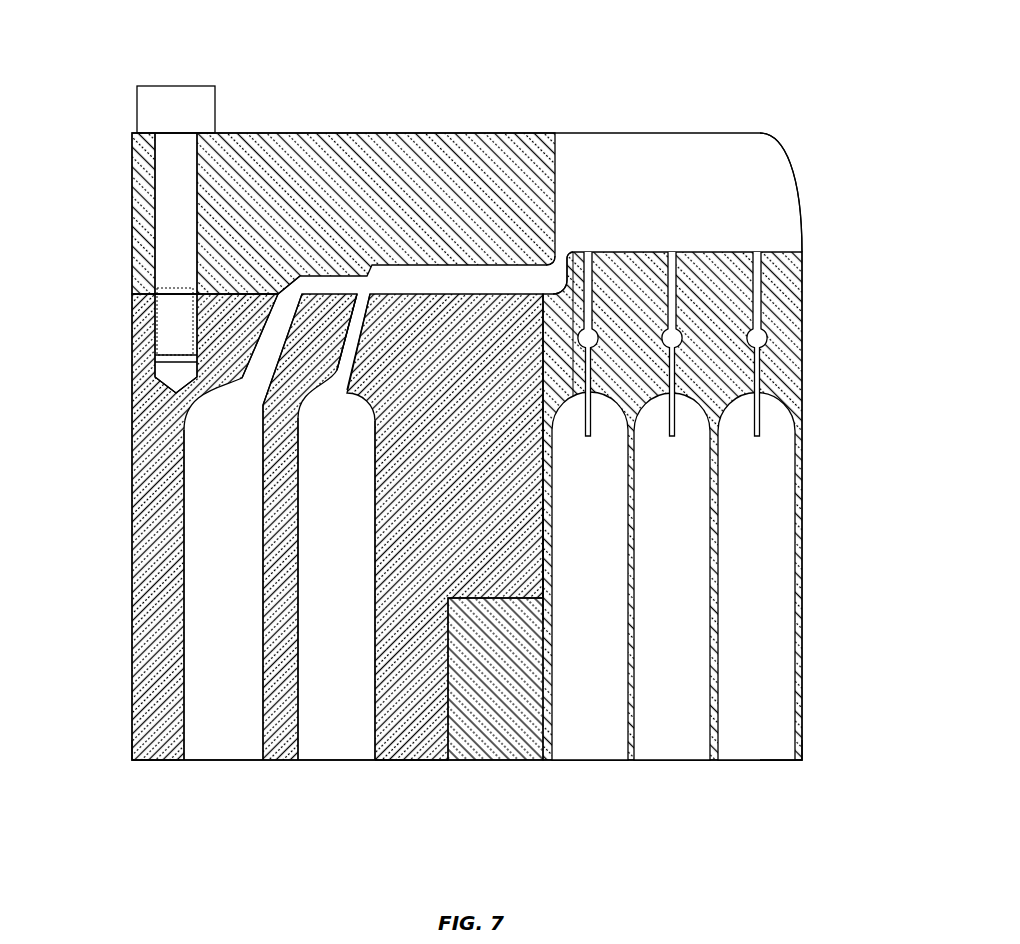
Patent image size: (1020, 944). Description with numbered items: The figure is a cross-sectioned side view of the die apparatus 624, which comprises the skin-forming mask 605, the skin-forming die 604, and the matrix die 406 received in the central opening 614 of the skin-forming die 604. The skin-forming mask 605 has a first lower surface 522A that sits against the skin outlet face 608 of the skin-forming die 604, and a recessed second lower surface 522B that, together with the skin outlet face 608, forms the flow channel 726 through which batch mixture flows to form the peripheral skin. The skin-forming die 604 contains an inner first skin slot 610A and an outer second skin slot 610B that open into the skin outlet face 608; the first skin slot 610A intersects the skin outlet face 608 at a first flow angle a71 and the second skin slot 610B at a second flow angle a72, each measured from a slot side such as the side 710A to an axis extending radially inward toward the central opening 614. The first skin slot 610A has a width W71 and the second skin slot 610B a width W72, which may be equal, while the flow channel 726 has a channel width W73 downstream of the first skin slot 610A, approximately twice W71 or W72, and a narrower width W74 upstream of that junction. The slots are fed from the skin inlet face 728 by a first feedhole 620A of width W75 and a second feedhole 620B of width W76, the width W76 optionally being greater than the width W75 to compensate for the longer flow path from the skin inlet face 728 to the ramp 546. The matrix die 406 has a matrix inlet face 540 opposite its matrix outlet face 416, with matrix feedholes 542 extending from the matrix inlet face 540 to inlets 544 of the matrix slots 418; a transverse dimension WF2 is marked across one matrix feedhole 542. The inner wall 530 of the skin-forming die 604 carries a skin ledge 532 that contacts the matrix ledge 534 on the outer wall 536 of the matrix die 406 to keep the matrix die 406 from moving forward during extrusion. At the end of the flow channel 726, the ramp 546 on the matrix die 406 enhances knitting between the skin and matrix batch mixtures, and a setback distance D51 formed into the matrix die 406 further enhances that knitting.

The die apparatus 624 is at (620, 56).
The skin-forming mask 605 is at (357, 130).
The skin-forming die 604 is at (128, 467).
The matrix die 406 is at (713, 508).
The skin outlet face 608 is at (140, 289).
The matrix slots 418 is at (675, 251).
The matrix outlet face 416 is at (797, 244).
The ramp 546 is at (571, 249).
The first lower surface 522A is at (150, 300).
The second lower surface 522B is at (556, 262).
The flow channel 726 is at (297, 277).
The first skin slot 610A is at (364, 334).
The second skin slot 610B is at (252, 350).
The side 710A is at (352, 362).
The first feedhole 620A is at (299, 735).
The second feedhole 620B is at (186, 735).
The inlets 544 is at (594, 393).
The matrix feedholes 542 is at (793, 740).
The matrix inlet face 540 is at (792, 766).
The outer wall 536 is at (446, 737).
The skin ledge 532 is at (543, 547).
The inner wall 530 is at (548, 498).
The matrix ledge 534 is at (545, 547).
The central opening 614 is at (549, 585).
The skin inlet face 728 is at (158, 763).
The setback distance D51 is at (580, 338).
The width of first skin slot W71 is at (334, 380).
The width of second skin slot W72 is at (313, 373).
The channel width W73 is at (498, 265).
The width of flow channel W74 is at (343, 276).
The width of first feedhole W75 is at (373, 552).
The width of second feedhole W76 is at (261, 552).
The width WF2 is at (720, 707).
The first flow angle a71 is at (541, 318).
The second flow angle a72 is at (340, 303).